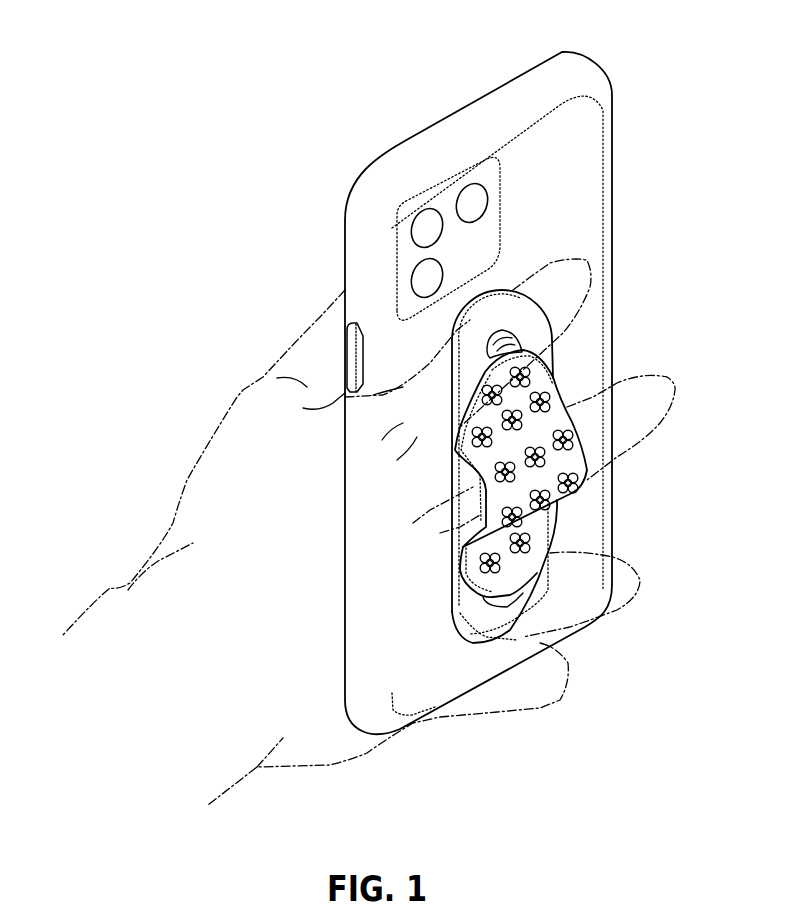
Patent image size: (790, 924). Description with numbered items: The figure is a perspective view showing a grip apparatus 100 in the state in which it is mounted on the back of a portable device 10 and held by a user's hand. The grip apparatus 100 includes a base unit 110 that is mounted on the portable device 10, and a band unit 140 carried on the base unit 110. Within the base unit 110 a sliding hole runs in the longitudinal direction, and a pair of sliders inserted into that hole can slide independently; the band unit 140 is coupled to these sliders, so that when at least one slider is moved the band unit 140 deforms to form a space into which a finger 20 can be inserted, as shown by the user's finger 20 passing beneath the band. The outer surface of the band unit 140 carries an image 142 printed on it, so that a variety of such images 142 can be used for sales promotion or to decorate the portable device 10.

The portable device 10 is at (493, 107).
The finger 20 is at (240, 390).
The grip apparatus 100 is at (564, 527).
The base unit 110 is at (496, 623).
The band unit 140 is at (566, 478).
The image 142 is at (573, 481).